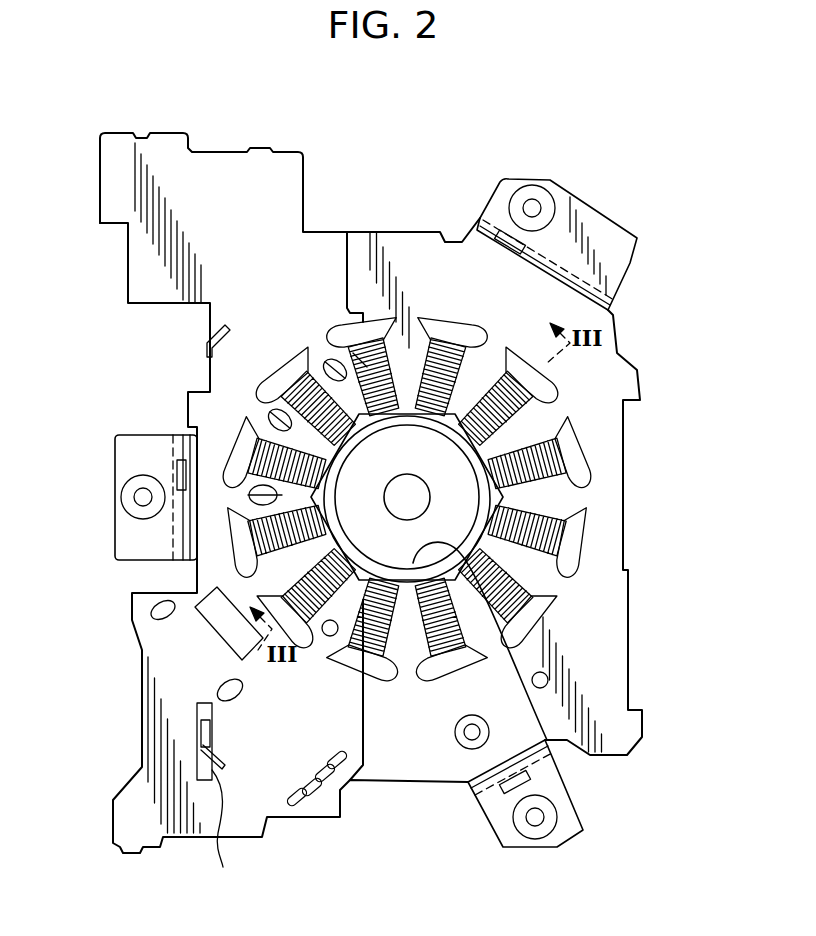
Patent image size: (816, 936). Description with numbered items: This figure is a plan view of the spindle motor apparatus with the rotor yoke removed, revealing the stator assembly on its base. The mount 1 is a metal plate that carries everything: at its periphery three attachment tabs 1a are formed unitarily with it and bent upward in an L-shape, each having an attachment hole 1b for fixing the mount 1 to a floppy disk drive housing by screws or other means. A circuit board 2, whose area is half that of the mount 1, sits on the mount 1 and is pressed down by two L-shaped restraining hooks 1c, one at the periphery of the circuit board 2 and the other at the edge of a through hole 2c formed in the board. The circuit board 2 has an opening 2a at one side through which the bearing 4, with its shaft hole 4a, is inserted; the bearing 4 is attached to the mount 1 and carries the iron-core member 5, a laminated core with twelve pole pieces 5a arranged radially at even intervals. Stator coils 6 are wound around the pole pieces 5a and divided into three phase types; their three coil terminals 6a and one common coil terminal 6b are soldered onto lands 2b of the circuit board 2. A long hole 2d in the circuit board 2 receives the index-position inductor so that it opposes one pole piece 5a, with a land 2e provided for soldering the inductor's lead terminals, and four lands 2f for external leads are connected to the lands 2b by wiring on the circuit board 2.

The mount 1 is at (437, 243).
The attachment tabs 1a is at (600, 225).
The attachment holes 1b is at (532, 208).
The restraining hooks 1c is at (205, 337).
The circuit board 2 is at (235, 200).
The opening 2a is at (547, 740).
The lands 2b is at (270, 422).
The through hole 2c is at (225, 837).
The long hole 2d is at (200, 630).
The land 2e is at (152, 610).
The lands 2f is at (332, 765).
The bearing 4 is at (450, 520).
The shaft hole 4a is at (425, 500).
The iron-core member 5 is at (493, 543).
The pole pieces 5a is at (240, 428).
The stator coils 6 is at (447, 363).
The coil terminals 6a is at (287, 552).
The common coil terminal 6b is at (353, 353).